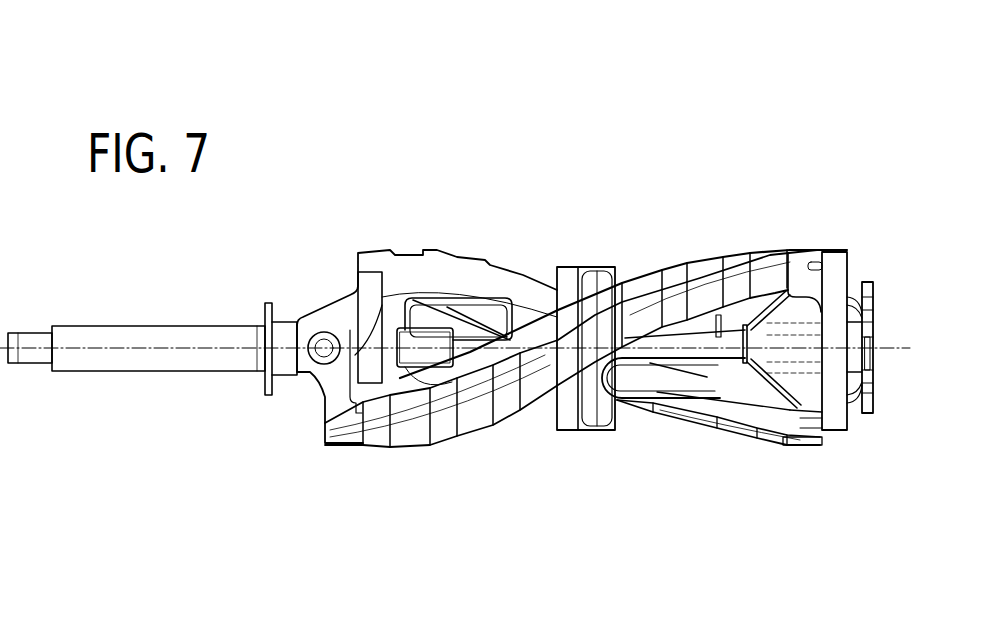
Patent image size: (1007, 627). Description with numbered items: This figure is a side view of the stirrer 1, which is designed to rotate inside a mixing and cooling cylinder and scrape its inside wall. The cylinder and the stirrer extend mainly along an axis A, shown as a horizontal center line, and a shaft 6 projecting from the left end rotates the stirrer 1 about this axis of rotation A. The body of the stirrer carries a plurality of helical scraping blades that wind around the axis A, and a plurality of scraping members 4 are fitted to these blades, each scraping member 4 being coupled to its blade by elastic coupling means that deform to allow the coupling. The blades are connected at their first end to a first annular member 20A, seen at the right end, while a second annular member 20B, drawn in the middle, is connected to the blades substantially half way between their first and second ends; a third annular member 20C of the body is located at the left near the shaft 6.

The stirrer 1 is at (586, 170).
The scraping member 4 is at (434, 232).
The shaft 6 is at (176, 383).
The first annular member 20A is at (845, 451).
The second annular member 20B is at (583, 451).
The third annular member 20C is at (315, 420).
The axis A is at (890, 348).